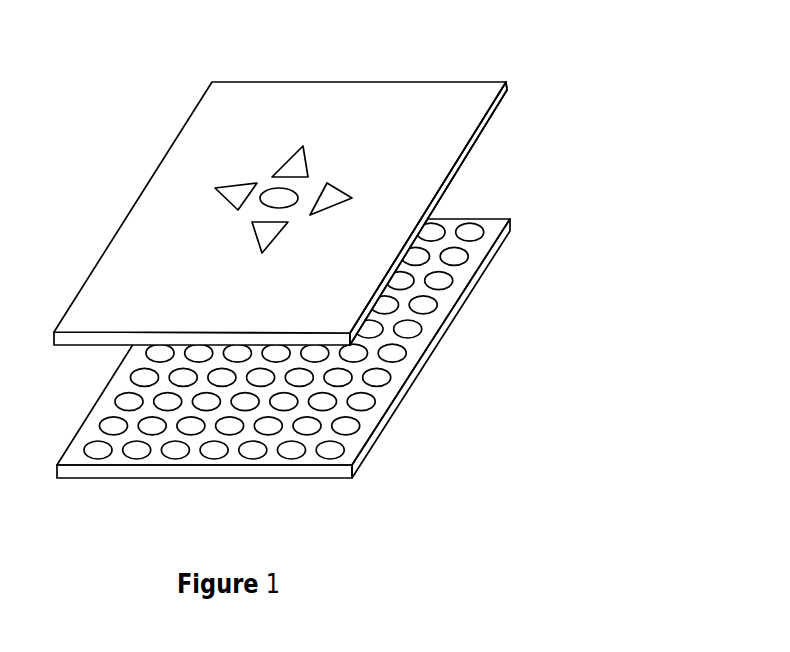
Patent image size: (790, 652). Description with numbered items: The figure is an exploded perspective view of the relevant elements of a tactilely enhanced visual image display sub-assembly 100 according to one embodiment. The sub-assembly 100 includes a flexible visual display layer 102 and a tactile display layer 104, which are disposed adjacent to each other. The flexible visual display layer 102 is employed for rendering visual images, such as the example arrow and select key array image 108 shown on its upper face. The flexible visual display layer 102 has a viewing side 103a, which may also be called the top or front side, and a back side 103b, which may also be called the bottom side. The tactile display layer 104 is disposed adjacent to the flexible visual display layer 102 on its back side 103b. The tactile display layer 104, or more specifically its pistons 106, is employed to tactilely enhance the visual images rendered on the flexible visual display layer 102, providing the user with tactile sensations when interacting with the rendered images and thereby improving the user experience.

The tactilely enhanced visual image display sub-assembly 100 is at (659, 288).
The flexible visual display layer 102 is at (338, 175).
The viewing side 103a is at (450, 97).
The back side 103b is at (489, 123).
The tactile display layer 104 is at (510, 219).
The pistons 106 is at (416, 325).
The arrow and select key array image 108 is at (290, 168).